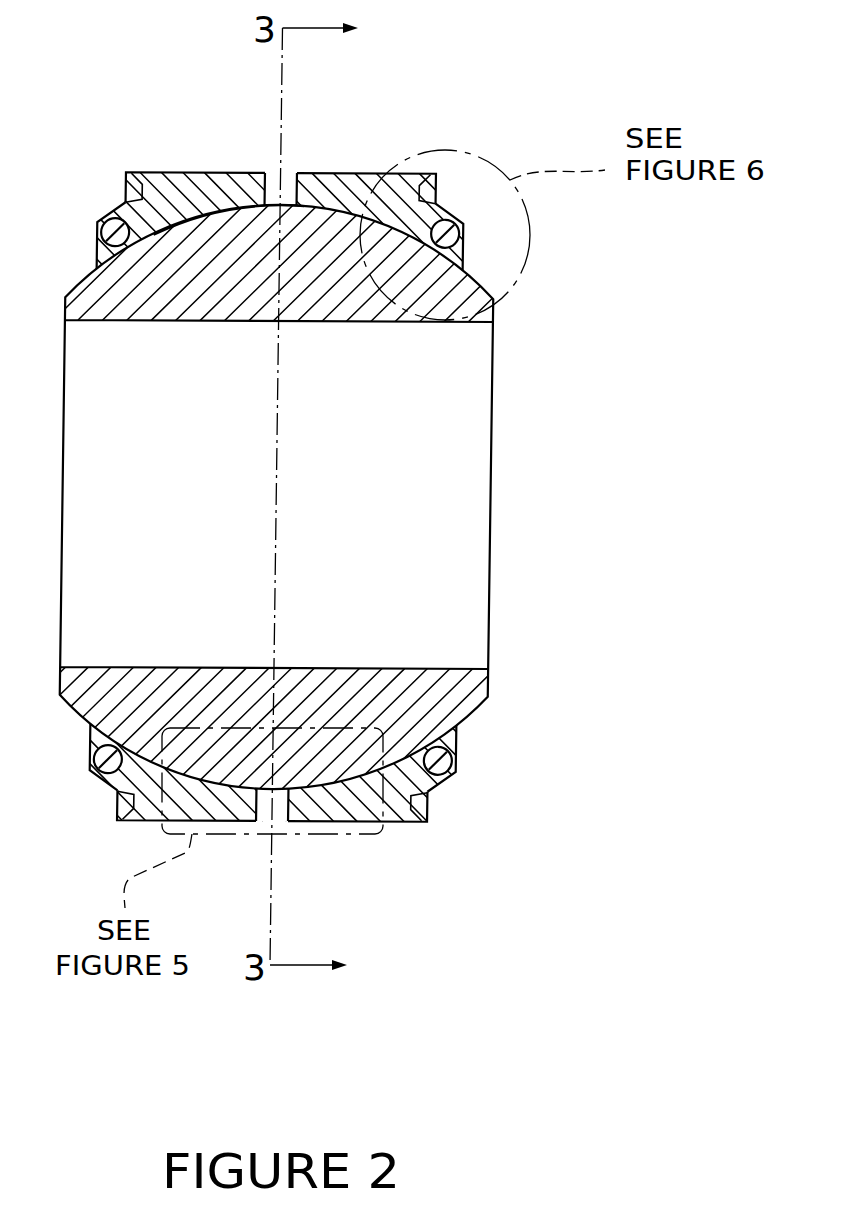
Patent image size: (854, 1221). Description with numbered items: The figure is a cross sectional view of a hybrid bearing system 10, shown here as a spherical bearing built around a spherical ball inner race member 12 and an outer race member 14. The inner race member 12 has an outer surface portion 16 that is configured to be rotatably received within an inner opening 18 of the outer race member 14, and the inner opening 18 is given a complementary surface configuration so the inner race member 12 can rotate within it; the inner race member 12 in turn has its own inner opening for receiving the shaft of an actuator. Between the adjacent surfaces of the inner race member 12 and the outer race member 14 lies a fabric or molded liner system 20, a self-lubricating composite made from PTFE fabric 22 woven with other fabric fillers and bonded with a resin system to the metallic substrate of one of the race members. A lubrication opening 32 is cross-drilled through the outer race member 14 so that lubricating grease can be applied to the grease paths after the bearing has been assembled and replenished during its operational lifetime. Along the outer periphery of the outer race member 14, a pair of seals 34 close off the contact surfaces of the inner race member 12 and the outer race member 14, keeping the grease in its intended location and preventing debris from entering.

The hybrid bearing system 10 is at (546, 111).
The spherical ball inner race member 12 is at (462, 322).
The outer race member 14 is at (157, 172).
The outer surface portion 16 is at (477, 275).
The inner opening 18 is at (347, 174).
The liner system 20 is at (207, 223).
The PTFE fabric 22 is at (428, 808).
The lubrication opening 32 is at (292, 172).
The seals 34 is at (452, 218).